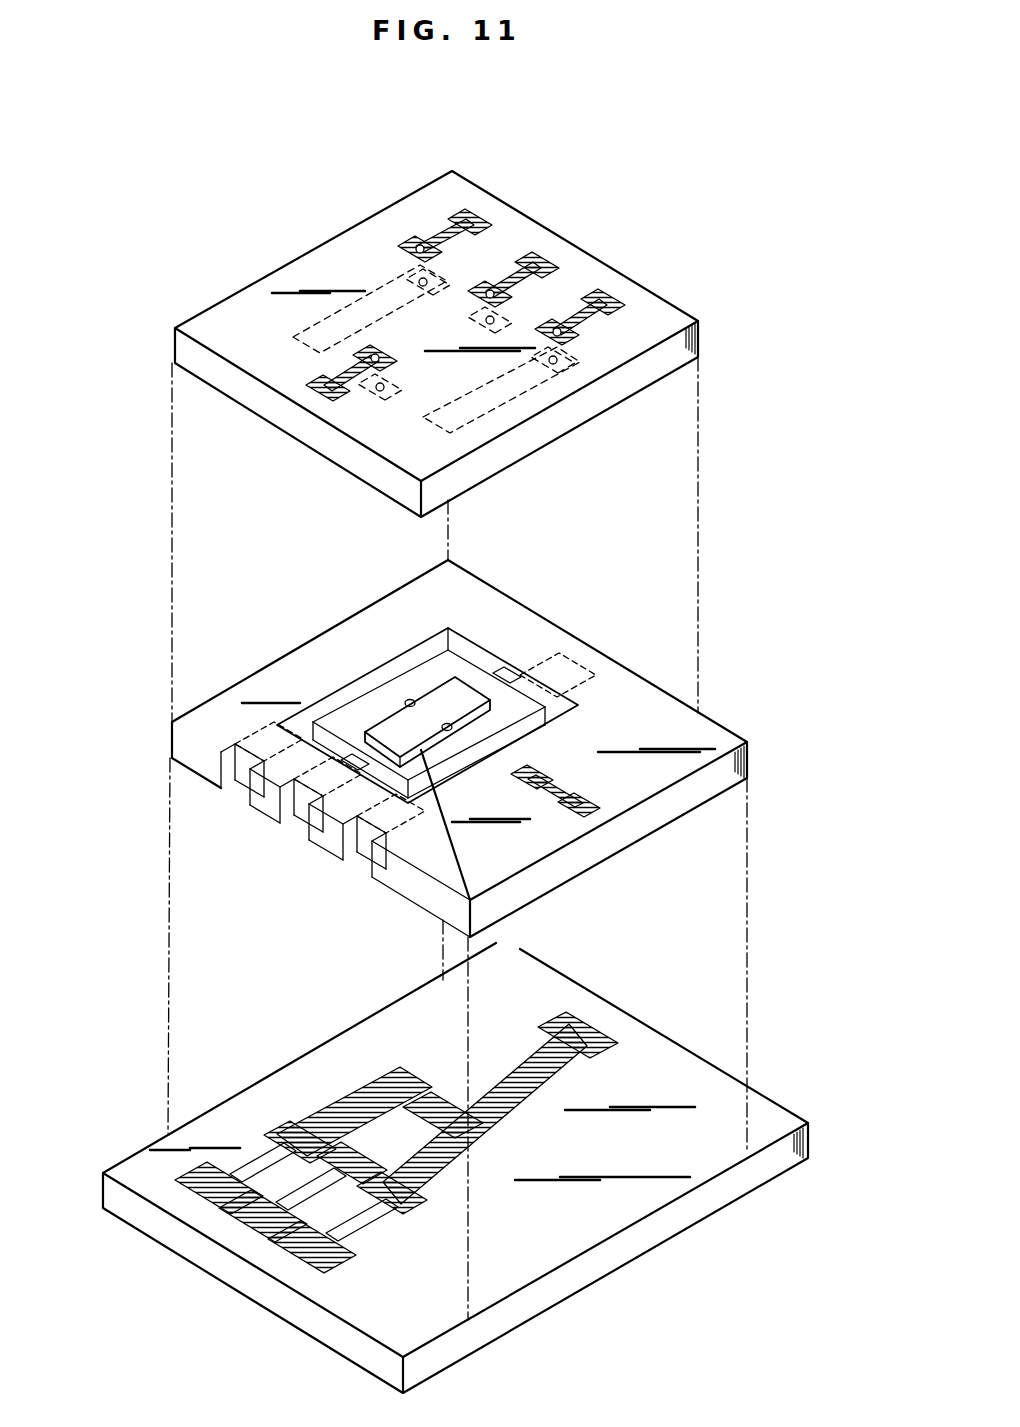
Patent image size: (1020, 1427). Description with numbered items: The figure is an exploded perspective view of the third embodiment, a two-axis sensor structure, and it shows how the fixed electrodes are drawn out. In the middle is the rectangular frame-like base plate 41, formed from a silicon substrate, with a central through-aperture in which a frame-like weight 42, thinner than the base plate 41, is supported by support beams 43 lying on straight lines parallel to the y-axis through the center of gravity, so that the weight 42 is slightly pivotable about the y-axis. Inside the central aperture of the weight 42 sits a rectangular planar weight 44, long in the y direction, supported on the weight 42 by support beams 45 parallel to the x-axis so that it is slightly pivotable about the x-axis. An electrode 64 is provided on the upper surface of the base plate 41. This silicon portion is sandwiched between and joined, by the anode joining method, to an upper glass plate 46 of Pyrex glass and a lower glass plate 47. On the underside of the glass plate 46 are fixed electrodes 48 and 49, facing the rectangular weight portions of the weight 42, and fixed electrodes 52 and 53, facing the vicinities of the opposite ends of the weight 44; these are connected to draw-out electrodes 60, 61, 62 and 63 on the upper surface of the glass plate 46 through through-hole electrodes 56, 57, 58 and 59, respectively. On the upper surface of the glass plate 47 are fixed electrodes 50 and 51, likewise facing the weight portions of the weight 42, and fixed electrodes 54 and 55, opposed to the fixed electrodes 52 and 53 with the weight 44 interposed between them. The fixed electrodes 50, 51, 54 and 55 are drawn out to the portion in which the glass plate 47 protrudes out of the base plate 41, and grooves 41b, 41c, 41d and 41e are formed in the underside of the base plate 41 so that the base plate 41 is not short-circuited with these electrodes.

The base plate 41 is at (710, 732).
The groove 41b is at (362, 850).
The groove 41c is at (232, 788).
The groove 41d is at (585, 662).
The groove 41e is at (298, 827).
The frame-like weight 42 is at (457, 658).
The support beams 43 is at (346, 756).
The planar weight 44 is at (392, 724).
The support beams 45 is at (409, 700).
The upper glass plate 46 is at (681, 318).
The glass plate 47 is at (763, 1112).
The fixed electrode 48 is at (530, 383).
The fixed electrode 49 is at (377, 288).
The fixed electrode 50 is at (507, 1133).
The fixed electrode 51 is at (333, 1113).
The fixed electrode 52 is at (484, 275).
The fixed electrode 53 is at (355, 400).
The fixed electrode 54 is at (440, 1093).
The fixed electrode 55 is at (300, 1120).
The through-hole electrode 56 is at (577, 338).
The through-hole electrode 57 is at (419, 248).
The through-hole electrode 58 is at (476, 290).
The through-hole electrode 59 is at (352, 343).
The draw-out electrode 60 is at (617, 297).
The draw-out electrode 61 is at (473, 208).
The draw-out electrode 62 is at (550, 258).
The draw-out electrode 63 is at (310, 394).
The electrode 64 is at (605, 803).